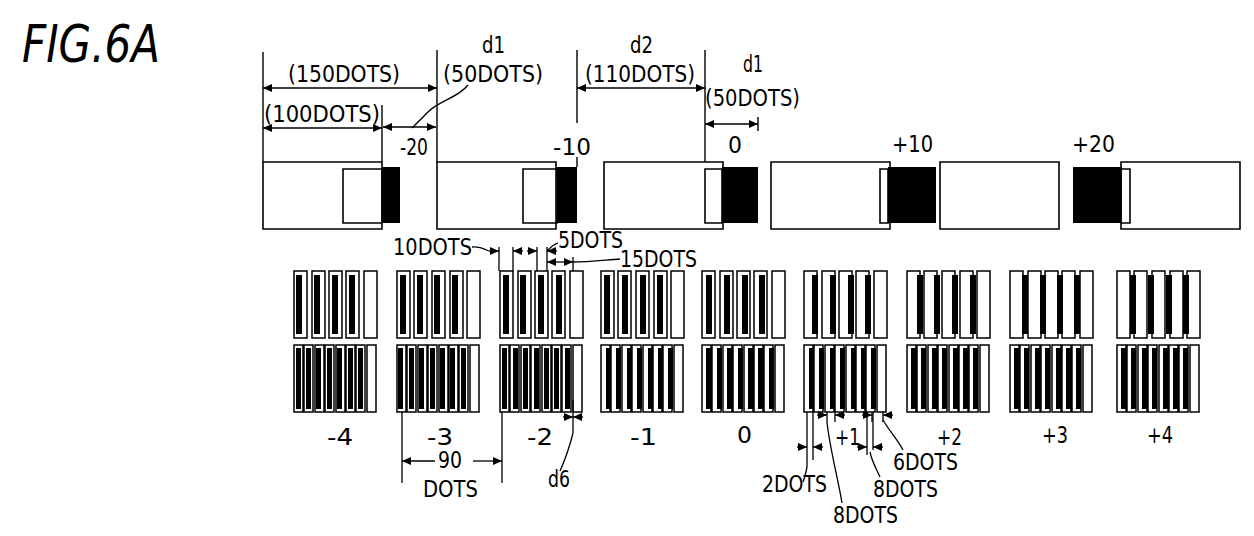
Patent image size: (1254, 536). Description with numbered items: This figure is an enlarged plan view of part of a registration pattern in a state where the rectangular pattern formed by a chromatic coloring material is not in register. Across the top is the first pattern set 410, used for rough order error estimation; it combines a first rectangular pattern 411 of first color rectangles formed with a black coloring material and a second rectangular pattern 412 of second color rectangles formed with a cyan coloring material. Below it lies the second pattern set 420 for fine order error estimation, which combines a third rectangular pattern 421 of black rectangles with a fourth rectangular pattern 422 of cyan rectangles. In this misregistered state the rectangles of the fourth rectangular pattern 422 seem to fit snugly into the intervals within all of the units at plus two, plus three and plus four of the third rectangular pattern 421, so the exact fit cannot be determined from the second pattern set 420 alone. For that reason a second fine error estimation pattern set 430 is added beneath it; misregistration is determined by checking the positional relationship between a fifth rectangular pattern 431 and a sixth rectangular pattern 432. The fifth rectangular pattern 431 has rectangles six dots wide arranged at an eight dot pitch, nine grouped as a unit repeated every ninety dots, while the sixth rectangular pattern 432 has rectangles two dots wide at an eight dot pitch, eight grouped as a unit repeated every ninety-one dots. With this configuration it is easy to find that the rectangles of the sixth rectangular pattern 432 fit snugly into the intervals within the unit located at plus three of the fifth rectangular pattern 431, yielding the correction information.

The first pattern set 410 is at (257, 219).
The first rectangular pattern 411 is at (270, 180).
The second rectangular pattern 412 is at (562, 166).
The second pattern set 420 is at (287, 310).
The third rectangular pattern 421 is at (1011, 271).
The fourth rectangular pattern 422 is at (1024, 273).
The second fine error estimation pattern set 430 is at (287, 380).
The fifth rectangular pattern 431 is at (607, 413).
The sixth rectangular pattern 432 is at (673, 413).